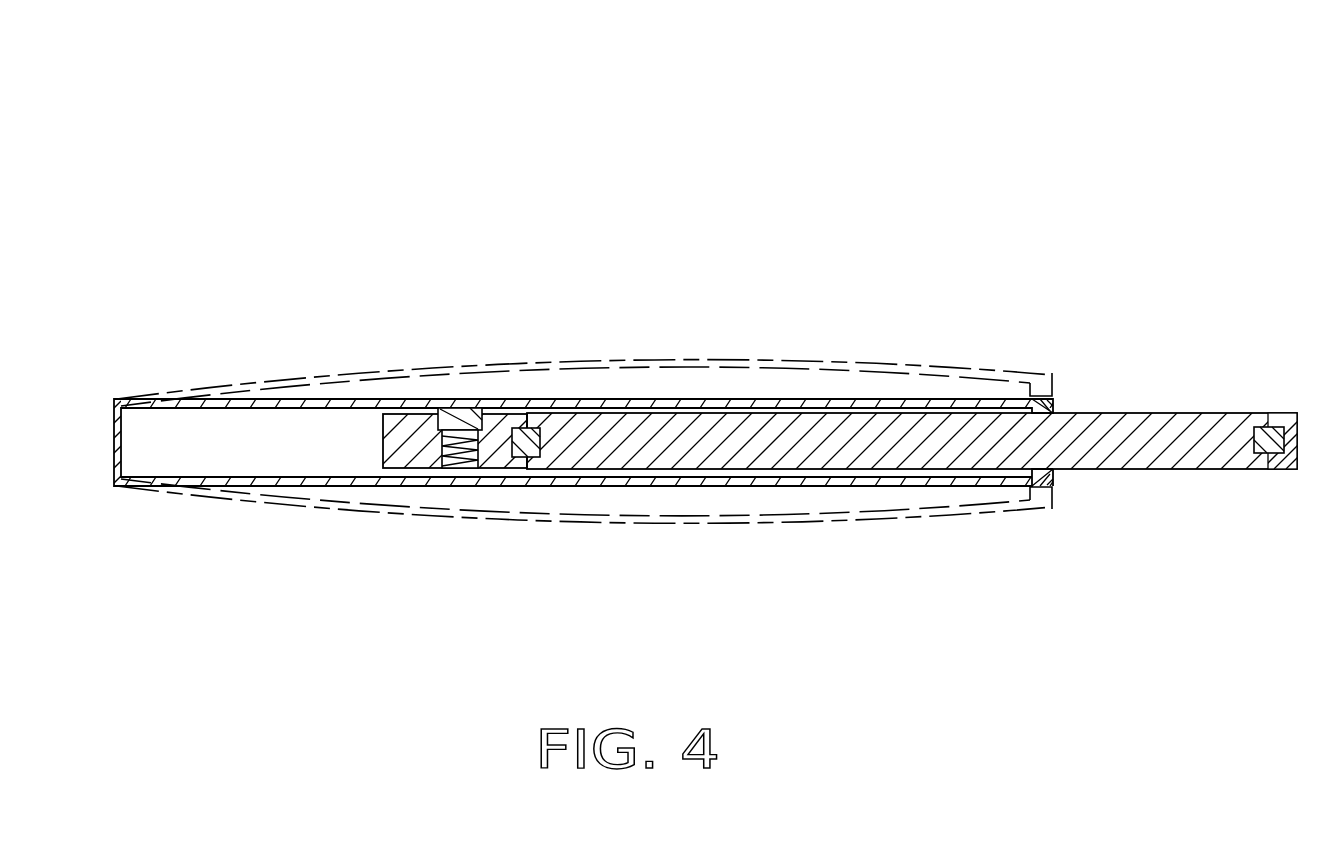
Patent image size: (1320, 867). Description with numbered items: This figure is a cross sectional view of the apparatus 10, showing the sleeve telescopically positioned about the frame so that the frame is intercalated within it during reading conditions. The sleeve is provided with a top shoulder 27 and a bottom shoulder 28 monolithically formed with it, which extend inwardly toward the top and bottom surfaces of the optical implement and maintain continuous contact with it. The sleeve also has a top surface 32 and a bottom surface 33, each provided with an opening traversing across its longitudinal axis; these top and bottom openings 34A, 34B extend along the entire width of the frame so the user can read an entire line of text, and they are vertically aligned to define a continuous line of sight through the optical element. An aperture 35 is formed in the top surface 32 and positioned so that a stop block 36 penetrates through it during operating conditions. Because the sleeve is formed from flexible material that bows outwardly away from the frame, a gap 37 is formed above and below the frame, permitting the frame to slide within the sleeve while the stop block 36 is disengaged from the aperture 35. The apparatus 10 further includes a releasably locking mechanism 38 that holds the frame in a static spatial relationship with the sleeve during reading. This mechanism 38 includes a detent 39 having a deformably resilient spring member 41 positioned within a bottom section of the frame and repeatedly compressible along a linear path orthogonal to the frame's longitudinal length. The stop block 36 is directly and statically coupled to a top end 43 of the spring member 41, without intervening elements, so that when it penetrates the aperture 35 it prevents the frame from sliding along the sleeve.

The apparatus 10 is at (298, 142).
The top shoulder 27 is at (1054, 402).
The bottom shoulder 28 is at (1054, 483).
The top surface 32 is at (310, 403).
The bottom surface 33 is at (260, 485).
The top opening 34A is at (843, 398).
The bottom opening 34B is at (845, 485).
The aperture 35 is at (215, 403).
The stop block 36 is at (492, 398).
The gap 37 is at (678, 382).
The releasably locking mechanism 38 is at (458, 520).
The detent 39 is at (456, 368).
The spring member 41 is at (446, 437).
The top end 43 is at (403, 410).